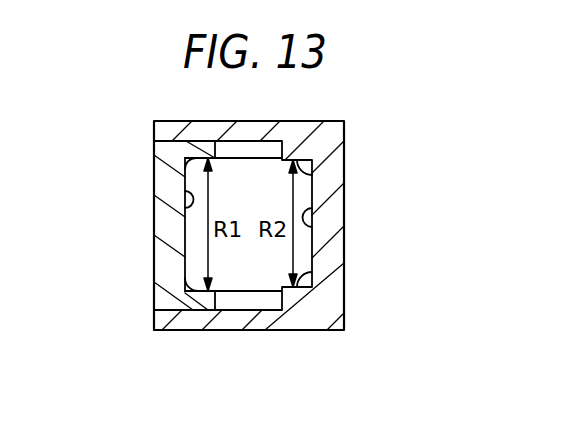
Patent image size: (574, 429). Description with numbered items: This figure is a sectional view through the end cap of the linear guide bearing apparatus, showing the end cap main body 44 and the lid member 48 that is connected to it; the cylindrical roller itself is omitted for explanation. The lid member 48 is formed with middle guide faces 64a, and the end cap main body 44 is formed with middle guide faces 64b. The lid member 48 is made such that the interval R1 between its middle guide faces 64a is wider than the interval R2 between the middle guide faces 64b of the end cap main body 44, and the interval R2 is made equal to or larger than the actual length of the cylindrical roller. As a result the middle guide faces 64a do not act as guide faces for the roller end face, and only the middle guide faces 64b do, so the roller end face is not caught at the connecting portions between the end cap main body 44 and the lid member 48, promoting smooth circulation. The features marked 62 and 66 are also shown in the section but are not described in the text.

The end cap main body 44 is at (310, 322).
The lid member 48 is at (167, 247).
The right side projection 62 is at (313, 226).
The middle guide faces 64a is at (188, 168).
The middle guide faces 64b is at (312, 181).
The left side projection 66 is at (185, 207).